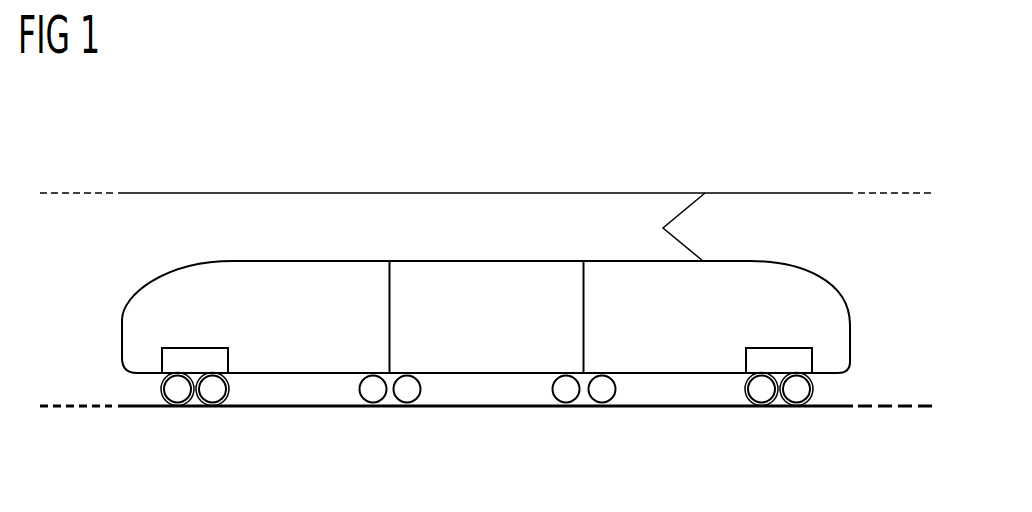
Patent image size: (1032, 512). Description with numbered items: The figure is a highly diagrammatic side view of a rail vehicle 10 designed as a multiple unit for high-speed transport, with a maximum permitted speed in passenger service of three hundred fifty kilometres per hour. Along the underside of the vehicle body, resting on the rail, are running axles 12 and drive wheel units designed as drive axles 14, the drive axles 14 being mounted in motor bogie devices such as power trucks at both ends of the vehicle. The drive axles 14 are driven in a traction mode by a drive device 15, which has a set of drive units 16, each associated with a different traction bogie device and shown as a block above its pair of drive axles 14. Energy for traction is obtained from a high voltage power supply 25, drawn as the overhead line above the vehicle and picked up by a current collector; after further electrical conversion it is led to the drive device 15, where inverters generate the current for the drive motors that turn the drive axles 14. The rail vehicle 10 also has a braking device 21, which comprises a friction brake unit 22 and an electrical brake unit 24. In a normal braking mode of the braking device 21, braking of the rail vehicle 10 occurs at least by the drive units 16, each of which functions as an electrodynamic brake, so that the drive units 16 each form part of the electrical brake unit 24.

The rail vehicle 10 is at (866, 268).
The running axles 12 is at (407, 402).
The drive axles 14 is at (212, 402).
The drive device 15 is at (241, 344).
The drive units 16 is at (185, 352).
The braking device 21 is at (145, 400).
The friction brake unit 22 is at (240, 405).
The electrical brake unit 24 is at (216, 318).
The high voltage power supply 25 is at (493, 193).